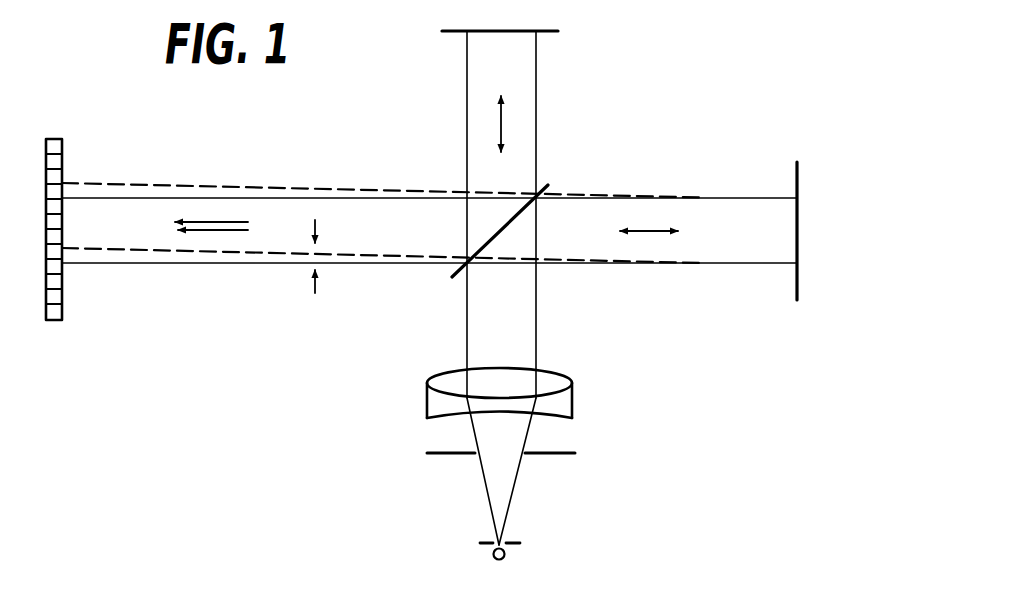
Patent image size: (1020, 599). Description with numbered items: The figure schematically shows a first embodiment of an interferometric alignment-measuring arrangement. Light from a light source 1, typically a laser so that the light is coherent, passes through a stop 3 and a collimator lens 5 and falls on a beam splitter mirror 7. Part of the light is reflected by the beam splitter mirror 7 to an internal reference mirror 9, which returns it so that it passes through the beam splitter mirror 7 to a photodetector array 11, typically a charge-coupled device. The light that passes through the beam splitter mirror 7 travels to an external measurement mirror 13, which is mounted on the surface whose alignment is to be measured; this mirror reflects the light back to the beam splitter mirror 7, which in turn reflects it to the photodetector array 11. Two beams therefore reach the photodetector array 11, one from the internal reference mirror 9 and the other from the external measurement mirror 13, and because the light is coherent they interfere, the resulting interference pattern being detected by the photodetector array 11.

The light source 1 is at (505, 556).
The stop 3 is at (560, 455).
The collimator lens 5 is at (572, 395).
The beam splitter mirror 7 is at (453, 278).
The internal reference mirror 9 is at (797, 176).
The photodetector array 11 is at (62, 290).
The external measurement mirror 13 is at (455, 33).